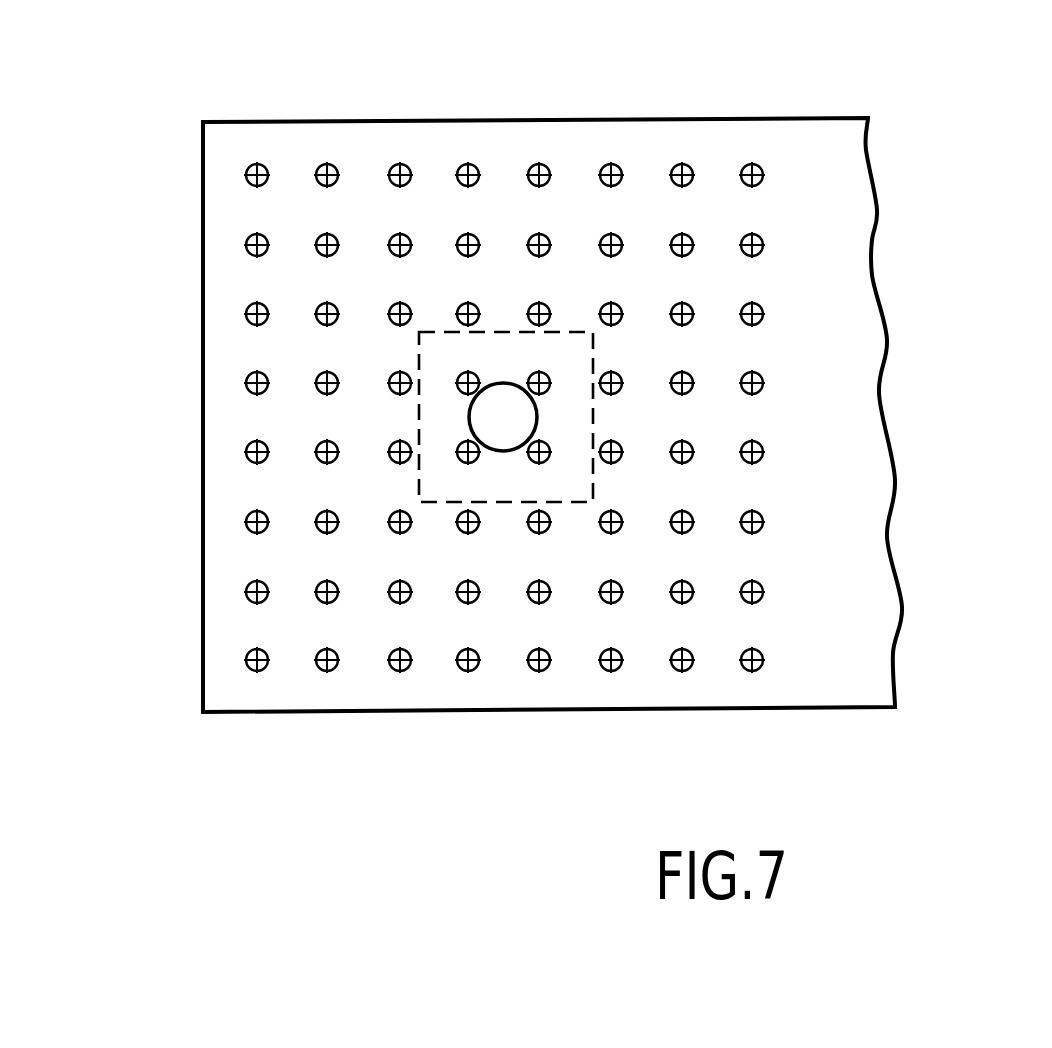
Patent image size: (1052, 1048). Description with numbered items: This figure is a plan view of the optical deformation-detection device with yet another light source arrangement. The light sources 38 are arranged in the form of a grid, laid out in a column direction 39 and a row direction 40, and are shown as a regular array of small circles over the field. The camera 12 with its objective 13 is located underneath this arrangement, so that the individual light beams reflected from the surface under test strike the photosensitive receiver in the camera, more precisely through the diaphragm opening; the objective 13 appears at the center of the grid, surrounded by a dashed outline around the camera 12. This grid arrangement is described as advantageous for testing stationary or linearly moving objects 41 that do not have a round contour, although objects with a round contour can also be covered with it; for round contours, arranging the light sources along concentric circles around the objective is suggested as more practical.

The camera 12 is at (432, 330).
The objective 13 is at (506, 400).
The light sources 38 is at (390, 306).
The column direction 39 is at (325, 726).
The row direction 40 is at (185, 593).
The objects 41 is at (811, 133).